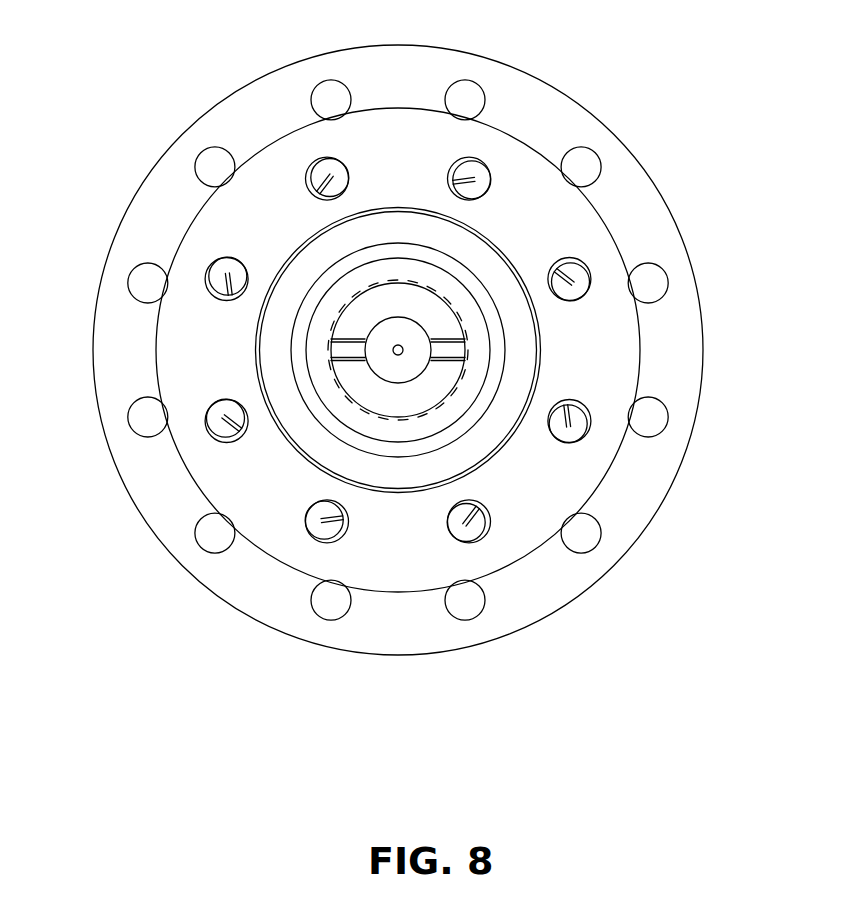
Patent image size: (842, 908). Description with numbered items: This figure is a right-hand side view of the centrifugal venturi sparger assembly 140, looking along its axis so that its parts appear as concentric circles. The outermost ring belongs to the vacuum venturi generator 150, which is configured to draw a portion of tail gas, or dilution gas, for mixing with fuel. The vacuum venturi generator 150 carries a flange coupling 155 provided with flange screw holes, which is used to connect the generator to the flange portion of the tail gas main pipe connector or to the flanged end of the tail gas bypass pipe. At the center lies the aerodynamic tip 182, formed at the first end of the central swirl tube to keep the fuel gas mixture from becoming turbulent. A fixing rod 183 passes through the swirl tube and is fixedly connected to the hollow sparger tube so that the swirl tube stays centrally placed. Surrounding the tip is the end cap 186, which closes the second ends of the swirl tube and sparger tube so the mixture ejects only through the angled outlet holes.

The centrifugal venturi sparger assembly 140 is at (240, 83).
The vacuum venturi generator 150 is at (188, 274).
The flange coupling 155 is at (587, 480).
The aerodynamic tip 182 is at (393, 339).
The fixing rod 183 is at (335, 352).
The end cap 186 is at (427, 307).